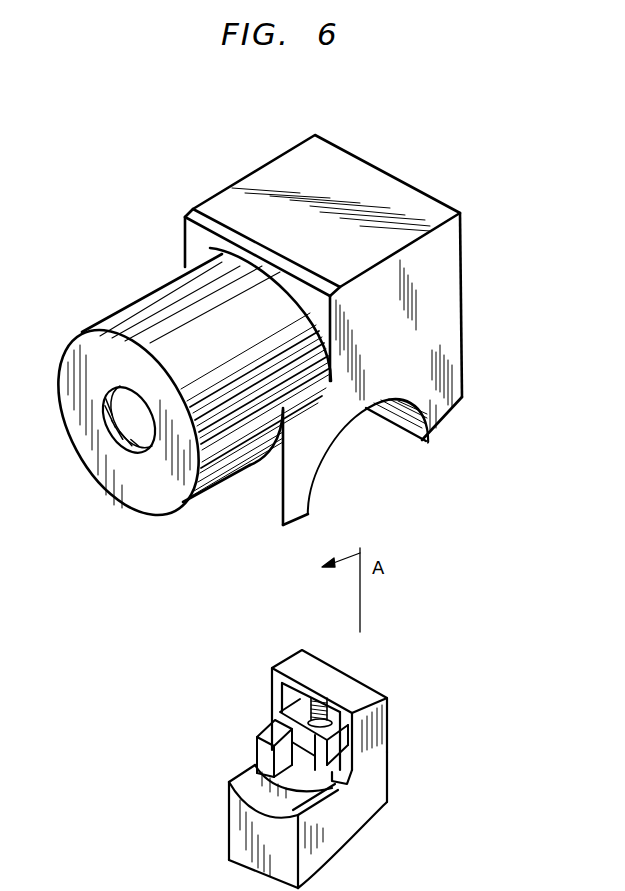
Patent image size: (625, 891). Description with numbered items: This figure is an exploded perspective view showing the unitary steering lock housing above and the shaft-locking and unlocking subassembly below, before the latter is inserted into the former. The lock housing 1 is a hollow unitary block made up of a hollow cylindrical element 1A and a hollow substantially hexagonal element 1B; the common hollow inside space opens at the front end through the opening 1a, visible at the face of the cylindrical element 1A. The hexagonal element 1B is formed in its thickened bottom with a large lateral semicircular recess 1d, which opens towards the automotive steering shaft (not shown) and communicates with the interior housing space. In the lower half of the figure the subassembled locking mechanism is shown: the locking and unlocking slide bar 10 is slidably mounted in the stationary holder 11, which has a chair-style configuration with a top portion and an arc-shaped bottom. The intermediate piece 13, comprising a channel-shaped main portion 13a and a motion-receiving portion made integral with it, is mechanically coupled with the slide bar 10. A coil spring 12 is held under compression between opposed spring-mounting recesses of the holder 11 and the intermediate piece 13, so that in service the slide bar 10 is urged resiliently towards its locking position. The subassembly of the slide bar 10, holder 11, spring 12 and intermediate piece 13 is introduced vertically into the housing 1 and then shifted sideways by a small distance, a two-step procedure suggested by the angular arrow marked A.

The lock housing 1 is at (398, 185).
The hollow cylindrical element 1A is at (149, 296).
The hollow substantially hexagonal element 1B is at (272, 170).
The front opening 1a is at (110, 437).
The large lateral semicircular recess 1d is at (322, 466).
The locking and unlocking slide bar 10 is at (316, 758).
The stationary holder 11 is at (320, 665).
The coil spring 12 is at (318, 705).
The intermediate piece 13 is at (292, 709).
The channel-shaped main portion 13a is at (262, 748).